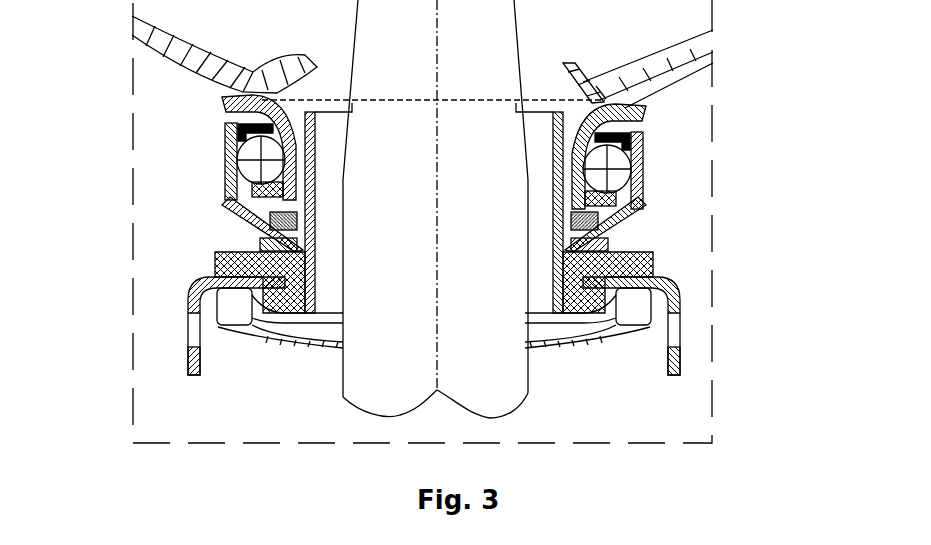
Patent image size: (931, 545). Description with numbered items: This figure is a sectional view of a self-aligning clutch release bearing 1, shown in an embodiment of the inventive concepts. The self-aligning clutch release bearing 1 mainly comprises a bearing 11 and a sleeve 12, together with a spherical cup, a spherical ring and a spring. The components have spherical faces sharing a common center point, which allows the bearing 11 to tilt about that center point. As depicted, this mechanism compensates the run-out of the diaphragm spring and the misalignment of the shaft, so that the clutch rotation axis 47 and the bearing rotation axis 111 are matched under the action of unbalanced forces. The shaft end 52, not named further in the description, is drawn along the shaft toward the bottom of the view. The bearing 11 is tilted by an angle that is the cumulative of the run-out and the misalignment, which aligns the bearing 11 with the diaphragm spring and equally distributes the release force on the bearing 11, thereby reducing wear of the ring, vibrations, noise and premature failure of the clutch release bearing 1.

The self-aligning clutch release bearing 1 is at (158, 160).
The bearing 11 is at (663, 145).
The sleeve 12 is at (689, 334).
The clutch rotation axis 47 is at (435, 294).
The shaft 52 is at (426, 380).
The bearing rotation axis 111 is at (435, 294).